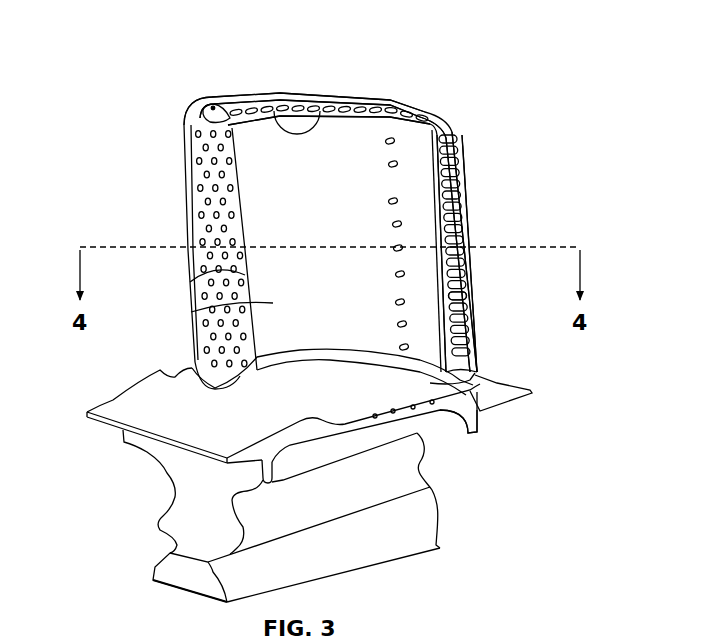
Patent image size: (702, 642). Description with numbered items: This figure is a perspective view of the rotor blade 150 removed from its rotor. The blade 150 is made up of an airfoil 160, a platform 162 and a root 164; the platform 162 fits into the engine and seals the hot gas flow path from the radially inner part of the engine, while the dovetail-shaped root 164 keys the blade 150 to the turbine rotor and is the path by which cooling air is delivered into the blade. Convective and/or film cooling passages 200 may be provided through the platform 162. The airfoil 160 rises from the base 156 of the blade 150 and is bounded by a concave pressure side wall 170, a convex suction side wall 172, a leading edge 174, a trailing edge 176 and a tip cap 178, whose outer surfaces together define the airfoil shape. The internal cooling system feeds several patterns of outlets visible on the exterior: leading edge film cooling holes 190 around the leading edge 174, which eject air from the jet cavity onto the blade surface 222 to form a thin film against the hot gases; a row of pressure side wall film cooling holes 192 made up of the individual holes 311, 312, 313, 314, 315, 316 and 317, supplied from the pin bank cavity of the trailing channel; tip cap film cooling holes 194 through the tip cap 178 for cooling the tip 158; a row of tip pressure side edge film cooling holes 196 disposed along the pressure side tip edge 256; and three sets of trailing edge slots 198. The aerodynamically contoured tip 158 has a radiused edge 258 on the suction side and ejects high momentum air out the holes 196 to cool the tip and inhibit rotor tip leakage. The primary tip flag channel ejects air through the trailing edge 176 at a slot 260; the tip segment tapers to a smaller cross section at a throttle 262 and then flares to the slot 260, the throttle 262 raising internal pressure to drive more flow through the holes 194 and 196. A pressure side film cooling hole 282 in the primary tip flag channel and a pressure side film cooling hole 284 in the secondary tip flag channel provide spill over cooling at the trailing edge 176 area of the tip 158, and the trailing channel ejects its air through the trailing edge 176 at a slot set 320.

The rotor blade 150 is at (478, 100).
The base 156 is at (220, 387).
The tip 158 is at (284, 98).
The airfoil 160 is at (182, 158).
The platform 162 is at (532, 392).
The root 164 is at (420, 478).
The pressure side wall 170 is at (240, 310).
The suction side wall 172 is at (256, 95).
The leading edge 174 is at (193, 189).
The trailing edge 176 is at (467, 178).
The tip cap 178 is at (366, 100).
The leading edge film cooling holes 190 is at (217, 270).
The pressure side wall film cooling holes 192 is at (410, 262).
The tip cap film cooling holes 194 is at (205, 105).
The tip pressure side edge film cooling holes 196 is at (380, 98).
The trailing edge slots 198 is at (462, 290).
The cooling passages 200 is at (478, 415).
The surface 222 is at (190, 207).
The pressure side tip edge 256 is at (325, 112).
The radiused edge 258 is at (212, 106).
The slot 260 is at (451, 132).
The throttle 262 is at (432, 118).
The pressure side film cooling hole 282 is at (384, 143).
The pressure side film cooling hole 284 is at (387, 166).
The pressure side wall film cooling hole 311 is at (387, 203).
The pressure side wall film cooling hole 312 is at (391, 226).
The pressure side wall film cooling hole 313 is at (392, 250).
The pressure side wall film cooling hole 314 is at (394, 276).
The pressure side wall film cooling hole 315 is at (394, 304).
The pressure side wall film cooling hole 316 is at (398, 327).
The pressure side wall film cooling hole 317 is at (497, 383).
The slot set 320 is at (450, 207).